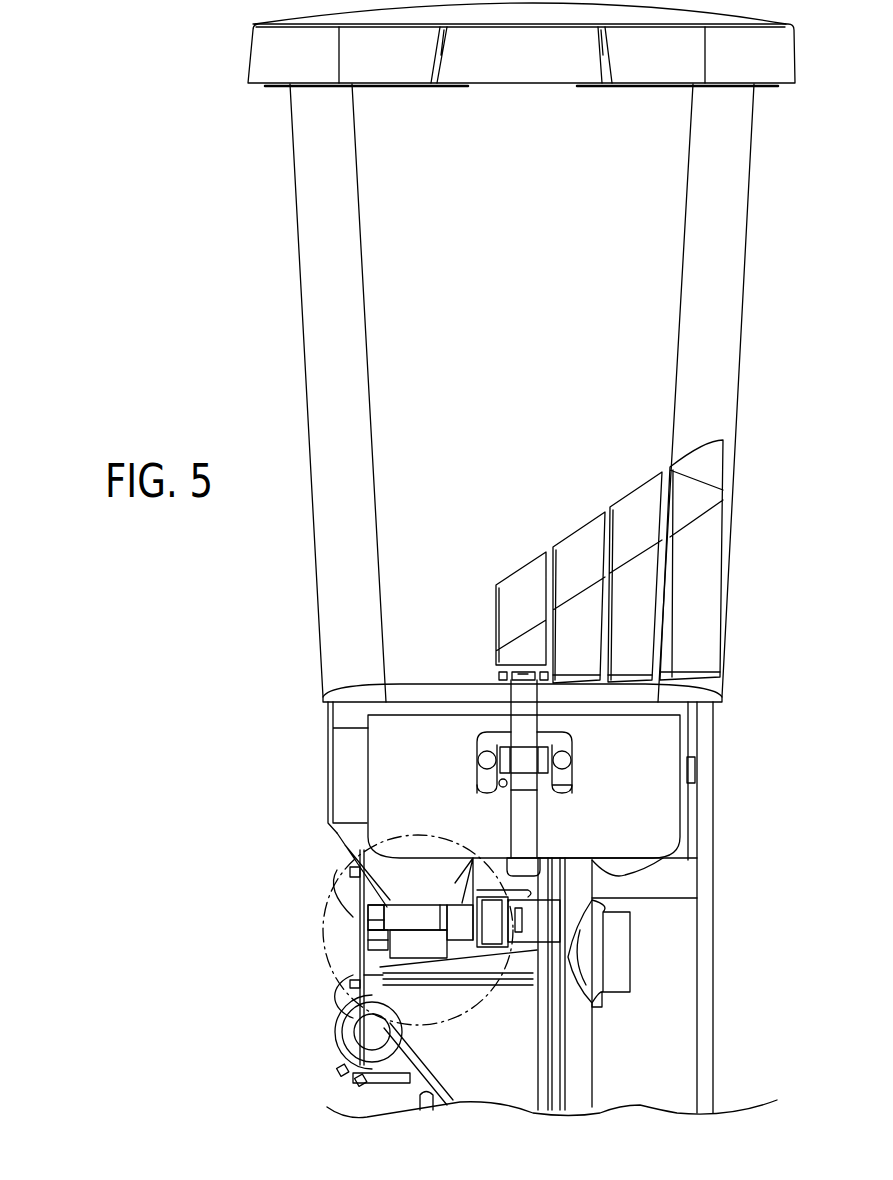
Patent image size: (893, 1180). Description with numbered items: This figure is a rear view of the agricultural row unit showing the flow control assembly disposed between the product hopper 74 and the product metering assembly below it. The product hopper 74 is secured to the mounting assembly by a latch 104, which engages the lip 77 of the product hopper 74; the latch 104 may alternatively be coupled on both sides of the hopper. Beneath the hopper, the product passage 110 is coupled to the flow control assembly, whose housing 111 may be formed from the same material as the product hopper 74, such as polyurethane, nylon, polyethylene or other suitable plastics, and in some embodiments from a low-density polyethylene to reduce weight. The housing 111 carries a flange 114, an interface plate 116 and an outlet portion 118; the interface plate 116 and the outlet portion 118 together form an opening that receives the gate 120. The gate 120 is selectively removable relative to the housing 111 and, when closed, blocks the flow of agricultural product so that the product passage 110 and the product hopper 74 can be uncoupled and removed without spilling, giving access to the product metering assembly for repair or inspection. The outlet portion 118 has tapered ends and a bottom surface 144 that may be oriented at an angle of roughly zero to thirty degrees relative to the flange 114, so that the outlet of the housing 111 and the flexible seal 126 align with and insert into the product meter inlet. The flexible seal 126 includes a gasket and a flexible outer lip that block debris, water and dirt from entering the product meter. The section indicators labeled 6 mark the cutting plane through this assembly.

The product hopper 74 is at (541, 374).
The lip 77 is at (410, 692).
The latch 104 is at (527, 723).
The product passage 110 is at (436, 892).
The housing 111 is at (200, 882).
The flange 114 is at (380, 910).
The interface plate 116 is at (377, 923).
The outlet portion 118 is at (377, 940).
The gate 120 is at (418, 952).
The flexible seal 126 is at (377, 980).
The bottom surface 144 is at (493, 953).
The section line for FIG. 6 is at (326, 898).